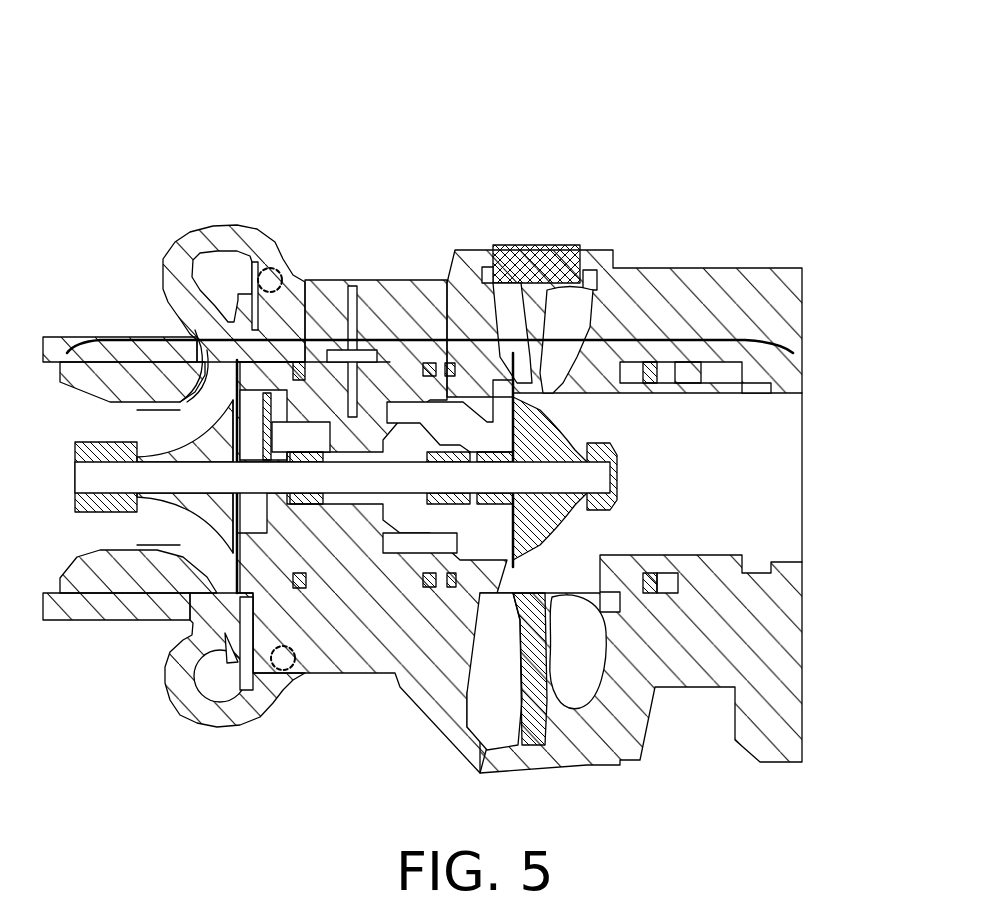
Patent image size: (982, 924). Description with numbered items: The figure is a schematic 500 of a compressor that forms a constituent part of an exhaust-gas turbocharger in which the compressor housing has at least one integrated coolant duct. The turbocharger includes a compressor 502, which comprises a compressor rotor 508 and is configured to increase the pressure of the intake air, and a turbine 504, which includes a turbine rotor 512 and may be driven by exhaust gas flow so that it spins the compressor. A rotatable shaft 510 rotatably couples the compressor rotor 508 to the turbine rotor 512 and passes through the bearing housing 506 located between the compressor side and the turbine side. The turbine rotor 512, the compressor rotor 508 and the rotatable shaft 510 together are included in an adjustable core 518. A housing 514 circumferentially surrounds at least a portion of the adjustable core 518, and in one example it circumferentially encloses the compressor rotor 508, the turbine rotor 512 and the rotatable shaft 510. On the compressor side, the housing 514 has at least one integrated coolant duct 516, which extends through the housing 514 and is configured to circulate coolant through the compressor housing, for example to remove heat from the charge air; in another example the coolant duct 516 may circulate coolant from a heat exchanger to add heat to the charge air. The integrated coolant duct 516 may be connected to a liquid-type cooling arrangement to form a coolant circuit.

The schematic 500 is at (795, 58).
The compressor 502 is at (338, 242).
The turbine 504 is at (822, 242).
The bearing housing 506 is at (442, 242).
The compressor rotor 508 is at (170, 442).
The rotatable shaft 510 is at (107, 473).
The turbine rotor 512 is at (570, 425).
The housing 514 is at (150, 607).
The integrated coolant duct 516 is at (268, 292).
The adjustable core 518 is at (430, 442).